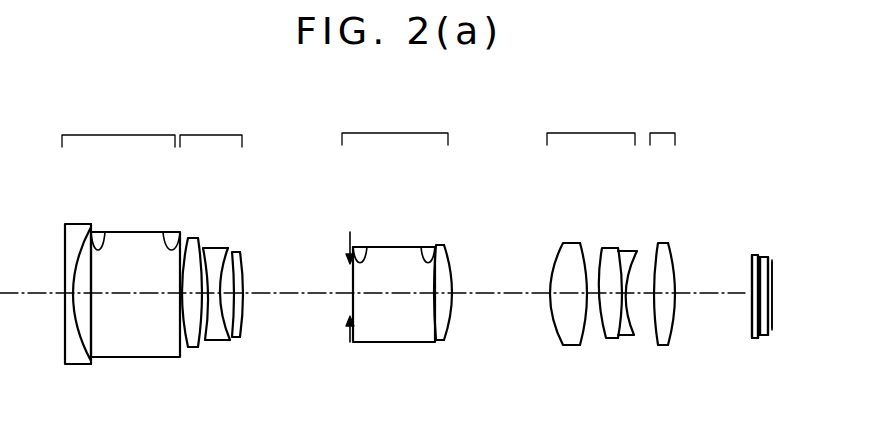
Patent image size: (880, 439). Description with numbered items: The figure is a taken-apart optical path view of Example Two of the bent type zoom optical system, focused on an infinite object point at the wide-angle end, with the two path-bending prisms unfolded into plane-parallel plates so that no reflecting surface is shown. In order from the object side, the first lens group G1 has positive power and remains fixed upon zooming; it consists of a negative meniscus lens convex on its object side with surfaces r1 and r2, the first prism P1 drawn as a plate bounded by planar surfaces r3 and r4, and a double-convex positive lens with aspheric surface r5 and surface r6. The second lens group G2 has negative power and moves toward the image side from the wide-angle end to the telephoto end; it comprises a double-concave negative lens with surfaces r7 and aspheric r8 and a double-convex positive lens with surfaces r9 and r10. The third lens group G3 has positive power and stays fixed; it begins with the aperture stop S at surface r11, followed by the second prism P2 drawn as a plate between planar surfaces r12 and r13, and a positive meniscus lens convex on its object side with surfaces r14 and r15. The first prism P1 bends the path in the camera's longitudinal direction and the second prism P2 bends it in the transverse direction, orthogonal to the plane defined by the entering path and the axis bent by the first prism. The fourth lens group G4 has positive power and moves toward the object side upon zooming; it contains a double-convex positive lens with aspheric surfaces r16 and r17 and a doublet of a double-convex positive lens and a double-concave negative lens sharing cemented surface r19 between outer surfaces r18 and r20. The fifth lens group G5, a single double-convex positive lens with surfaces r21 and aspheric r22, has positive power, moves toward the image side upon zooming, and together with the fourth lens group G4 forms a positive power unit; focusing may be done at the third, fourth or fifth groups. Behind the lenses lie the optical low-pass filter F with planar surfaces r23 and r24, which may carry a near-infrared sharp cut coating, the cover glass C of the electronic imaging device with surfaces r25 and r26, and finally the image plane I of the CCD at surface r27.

The object-side surface of the negative meniscus lens r1 is at (63, 248).
The image-side surface of the negative meniscus lens r2 is at (72, 223).
The entrance surface of the first prism r3 is at (105, 232).
The exit surface of the first prism r4 is at (165, 236).
The object-side surface of the double-convex lens of the first lens group r5 is at (188, 238).
The image-side surface of the double-convex lens of the first lens group r6 is at (199, 240).
The object-side surface of the double-concave lens r7 is at (206, 248).
The image-side surface of the double-concave lens r8 is at (222, 250).
The object-side surface of the double-convex lens of the second lens group r9 is at (239, 252).
The image-side surface of the double-convex lens of the second lens group r10 is at (244, 262).
The aperture stop surface r11 is at (350, 258).
The entrance surface of the second prism r12 is at (356, 252).
The exit surface of the second prism r13 is at (428, 252).
The object-side surface of the positive meniscus lens r14 is at (437, 252).
The image-side surface of the positive meniscus lens r15 is at (448, 256).
The object-side surface of the double-convex lens of the fourth lens group r16 is at (558, 255).
The image-side surface of the double-convex lens of the fourth lens group r17 is at (583, 255).
The object-side surface of the doublet r18 is at (602, 250).
The cemented surface of the doublet r19 is at (619, 252).
The image-side surface of the doublet r20 is at (637, 253).
The object-side surface of the fifth-group double-convex lens r21 is at (657, 245).
The image-side surface of the fifth-group double-convex lens r22 is at (670, 256).
The entrance surface of the optical low-pass filter r23 is at (752, 260).
The exit surface of the optical low-pass filter r24 is at (755, 257).
The entrance surface of the cover glass r25 is at (762, 257).
The exit surface of the cover glass r26 is at (767, 257).
The imaging plane surface r27 is at (772, 263).
The first lens group G1 is at (118, 125).
The second lens group G2 is at (211, 125).
The third lens group G3 is at (395, 124).
The fourth lens group G4 is at (591, 124).
The fifth lens group G5 is at (661, 124).
The first prism P1 is at (138, 345).
The second prism P2 is at (395, 333).
The aperture stop S is at (350, 342).
The optical low-pass filter F is at (753, 340).
The cover glass C is at (763, 340).
The image plane I is at (772, 285).